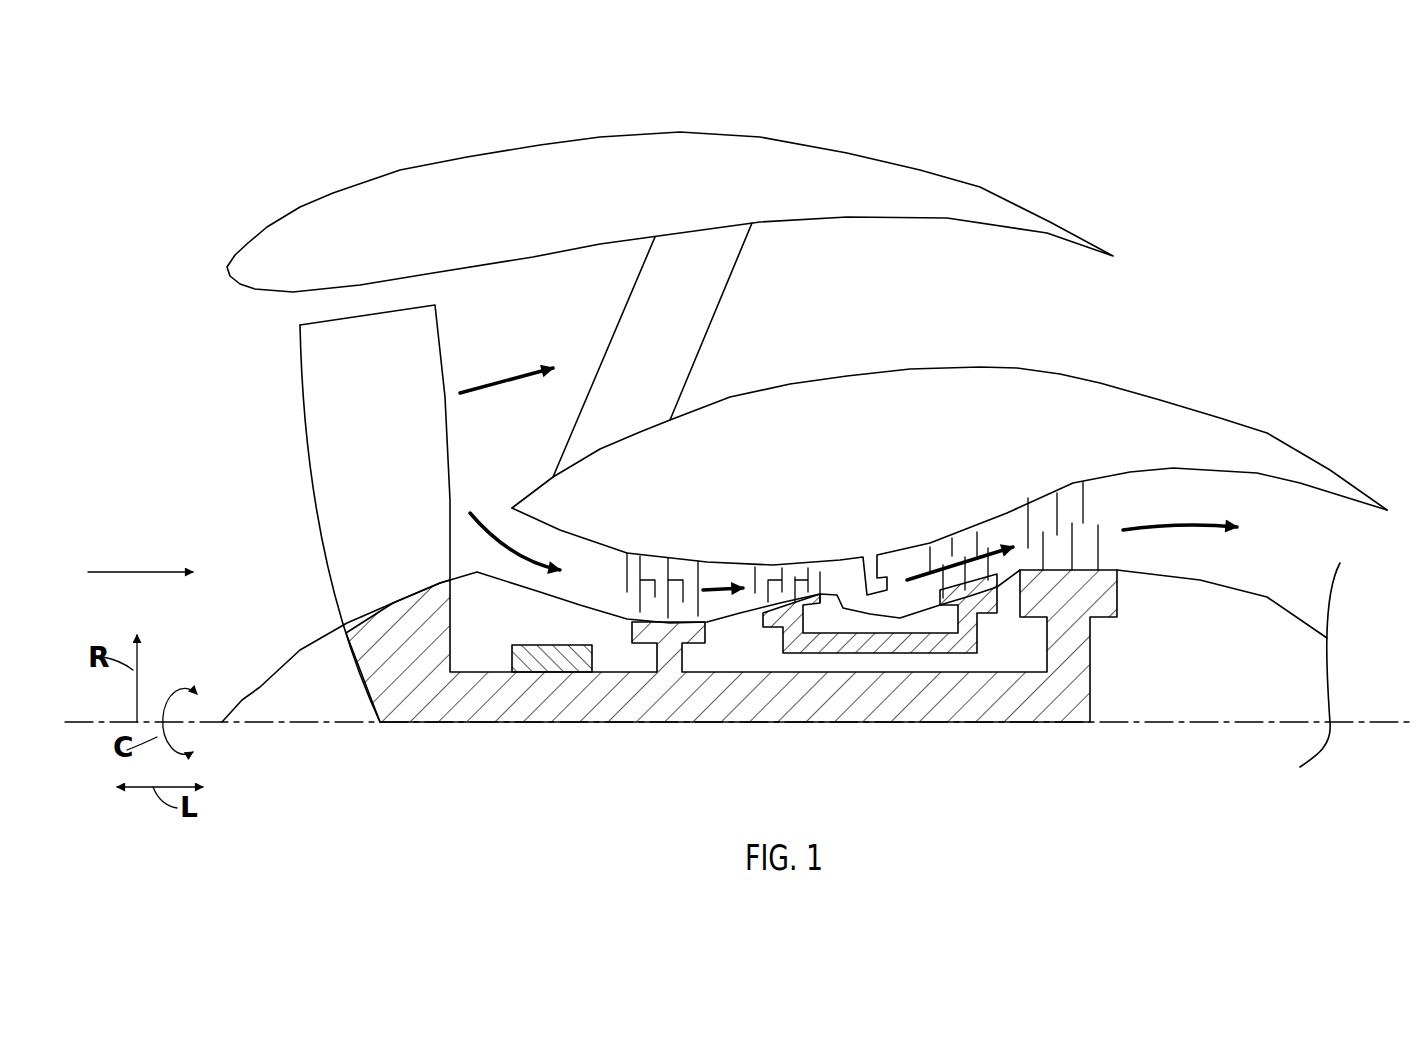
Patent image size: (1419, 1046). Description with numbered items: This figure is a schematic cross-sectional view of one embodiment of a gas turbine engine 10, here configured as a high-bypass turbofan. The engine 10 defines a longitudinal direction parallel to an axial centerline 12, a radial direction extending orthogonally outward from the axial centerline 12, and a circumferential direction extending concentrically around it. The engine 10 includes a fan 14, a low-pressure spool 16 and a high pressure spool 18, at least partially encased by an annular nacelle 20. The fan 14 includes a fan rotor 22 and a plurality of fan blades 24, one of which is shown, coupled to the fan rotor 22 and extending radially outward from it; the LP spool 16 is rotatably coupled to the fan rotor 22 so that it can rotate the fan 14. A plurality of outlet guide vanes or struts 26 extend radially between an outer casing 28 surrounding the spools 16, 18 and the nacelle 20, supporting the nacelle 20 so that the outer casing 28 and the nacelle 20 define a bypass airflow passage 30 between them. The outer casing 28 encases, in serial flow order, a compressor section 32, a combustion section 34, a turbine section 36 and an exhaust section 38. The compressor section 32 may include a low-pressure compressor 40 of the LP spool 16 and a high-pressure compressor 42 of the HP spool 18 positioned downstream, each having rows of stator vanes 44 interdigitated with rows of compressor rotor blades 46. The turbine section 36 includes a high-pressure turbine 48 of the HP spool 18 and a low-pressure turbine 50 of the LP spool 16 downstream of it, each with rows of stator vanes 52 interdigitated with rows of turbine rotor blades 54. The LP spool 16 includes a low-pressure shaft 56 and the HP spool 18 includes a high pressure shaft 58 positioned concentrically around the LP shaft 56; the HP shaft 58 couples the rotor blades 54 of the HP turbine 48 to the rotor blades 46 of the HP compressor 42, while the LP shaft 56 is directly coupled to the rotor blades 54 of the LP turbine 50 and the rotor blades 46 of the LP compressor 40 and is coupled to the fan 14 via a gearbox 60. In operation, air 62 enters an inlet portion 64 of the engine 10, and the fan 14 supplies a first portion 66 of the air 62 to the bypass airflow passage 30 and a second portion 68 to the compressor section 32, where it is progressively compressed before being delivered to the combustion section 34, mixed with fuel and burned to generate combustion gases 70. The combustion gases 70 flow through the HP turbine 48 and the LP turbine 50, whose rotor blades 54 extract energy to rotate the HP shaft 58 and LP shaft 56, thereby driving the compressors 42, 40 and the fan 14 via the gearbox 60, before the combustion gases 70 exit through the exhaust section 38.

The gas turbine engine 10 is at (250, 98).
The axial centerline 12 is at (1187, 728).
The fan 14 is at (283, 390).
The low-pressure (LP) spool 16 is at (660, 740).
The high pressure (HP) spool 18 is at (958, 667).
The annular nacelle 20 is at (353, 183).
The fan rotor 22 is at (300, 650).
The fan blades 24 is at (310, 494).
The outlet guide vanes or struts 26 is at (622, 312).
The outer casing 28 is at (1017, 368).
The bypass airflow passage 30 is at (839, 313).
The compressor section 32 is at (733, 518).
The combustion section 34 is at (867, 530).
The turbine section 36 is at (980, 490).
The exhaust section 38 is at (1339, 545).
The low-pressure (LP) compressor 40 is at (652, 533).
The high-pressure (HP) compressor 42 is at (782, 533).
The stator vanes 44 is at (627, 568).
The compressor rotor blades 46 is at (703, 590).
The high-pressure (HP) turbine 48 is at (940, 518).
The low-pressure (LP) turbine 50 is at (1067, 463).
The stator vanes 52 is at (927, 555).
The turbine rotor blades 54 is at (1100, 540).
The low-pressure (LP) shaft 56 is at (780, 703).
The high pressure (HP) shaft 58 is at (940, 653).
The gearbox 60 is at (562, 703).
The air 62 is at (140, 570).
The inlet portion 64 is at (223, 305).
The first portion of the air 66 is at (507, 373).
The second portion of the air 68 is at (483, 513).
The combustion gases 70 is at (1000, 543).